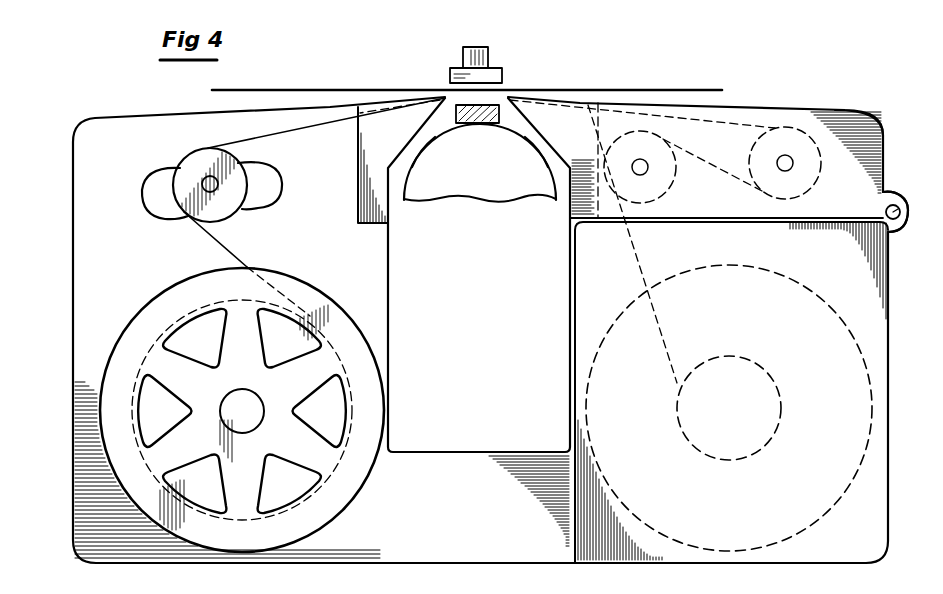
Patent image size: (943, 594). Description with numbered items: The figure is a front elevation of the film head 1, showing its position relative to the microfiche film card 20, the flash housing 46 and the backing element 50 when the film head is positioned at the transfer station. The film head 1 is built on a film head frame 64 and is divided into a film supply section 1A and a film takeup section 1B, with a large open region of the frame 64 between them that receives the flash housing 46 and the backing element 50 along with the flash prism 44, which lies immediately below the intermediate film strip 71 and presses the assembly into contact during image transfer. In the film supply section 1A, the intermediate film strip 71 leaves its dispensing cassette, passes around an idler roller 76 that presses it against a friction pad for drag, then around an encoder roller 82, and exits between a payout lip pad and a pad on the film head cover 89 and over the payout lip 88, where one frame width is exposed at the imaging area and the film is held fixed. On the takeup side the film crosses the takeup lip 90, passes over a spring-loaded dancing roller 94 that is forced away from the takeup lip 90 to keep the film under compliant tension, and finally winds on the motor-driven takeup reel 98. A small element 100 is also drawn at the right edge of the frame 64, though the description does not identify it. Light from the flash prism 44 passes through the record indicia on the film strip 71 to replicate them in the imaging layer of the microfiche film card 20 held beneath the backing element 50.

The film head 1 is at (452, 509).
The film supply section 1A is at (570, 293).
The film takeup section 1B is at (390, 293).
The microfiche film card 20 is at (617, 86).
The flash prism 44 is at (478, 120).
The flash housing 46 is at (404, 192).
The backing element 50 is at (451, 72).
The film head frame 64 is at (118, 118).
The intermediate film strip 71 is at (293, 127).
The idler roller 76 is at (664, 192).
The encoder roller 82 is at (752, 148).
The payout lip 88 is at (530, 130).
The film head cover 89 is at (820, 112).
The takeup lip 90 is at (428, 130).
The dancing roller 94 is at (233, 218).
The takeup reel 98 is at (293, 278).
The latch member 100 is at (895, 204).